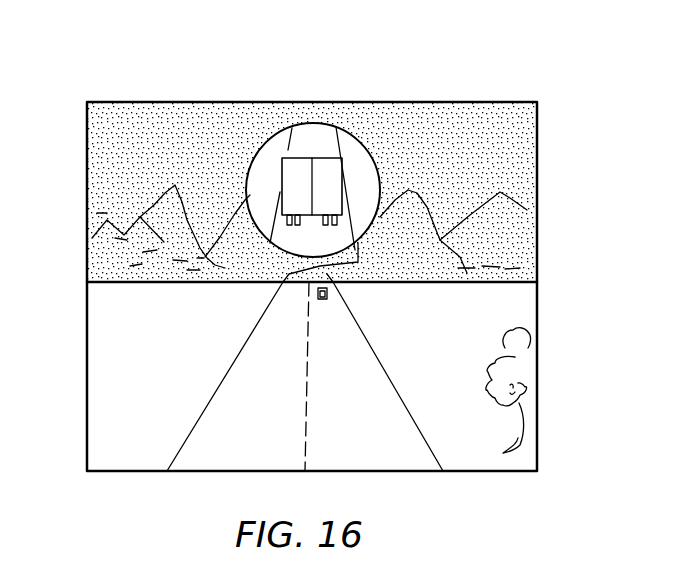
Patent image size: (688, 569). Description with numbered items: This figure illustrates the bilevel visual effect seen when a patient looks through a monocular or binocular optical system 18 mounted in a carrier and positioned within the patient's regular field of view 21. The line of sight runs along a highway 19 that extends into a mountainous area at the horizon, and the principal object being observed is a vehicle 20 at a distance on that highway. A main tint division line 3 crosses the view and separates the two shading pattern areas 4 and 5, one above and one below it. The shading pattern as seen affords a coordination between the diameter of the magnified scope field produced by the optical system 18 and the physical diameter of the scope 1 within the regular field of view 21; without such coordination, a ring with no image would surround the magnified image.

The scope 1 is at (277, 132).
The main tint division line 3 is at (535, 282).
The shading pattern area 4 is at (447, 152).
The shading pattern area 5 is at (493, 352).
The optical system 18 is at (316, 145).
The highway 19 is at (443, 471).
The vehicle 20 is at (323, 301).
The regular field of view 21 is at (87, 152).